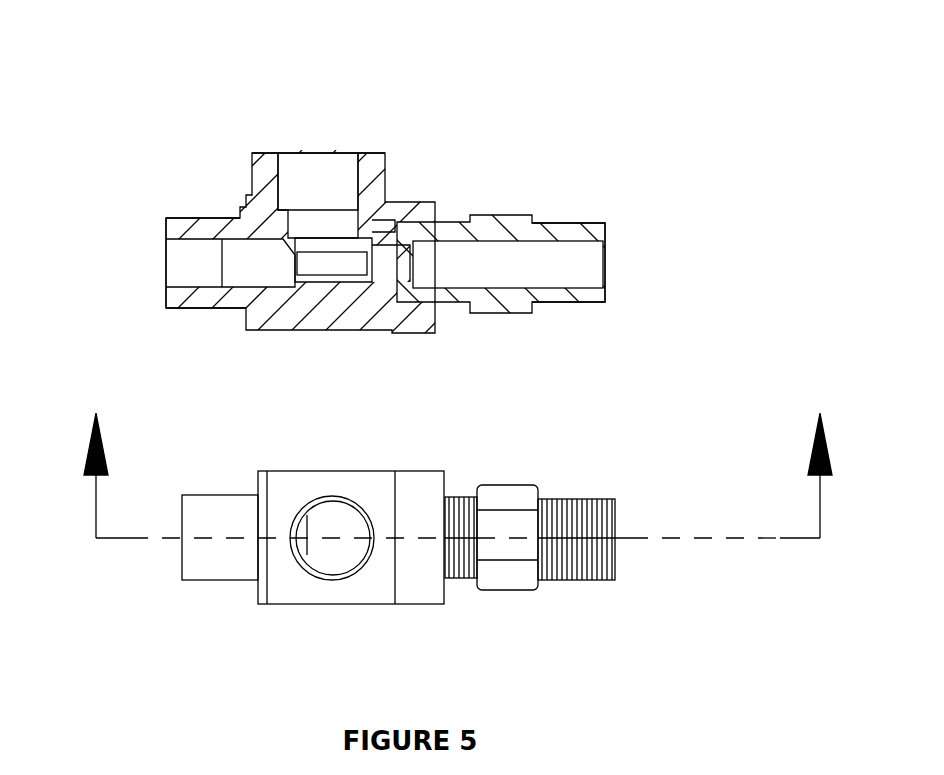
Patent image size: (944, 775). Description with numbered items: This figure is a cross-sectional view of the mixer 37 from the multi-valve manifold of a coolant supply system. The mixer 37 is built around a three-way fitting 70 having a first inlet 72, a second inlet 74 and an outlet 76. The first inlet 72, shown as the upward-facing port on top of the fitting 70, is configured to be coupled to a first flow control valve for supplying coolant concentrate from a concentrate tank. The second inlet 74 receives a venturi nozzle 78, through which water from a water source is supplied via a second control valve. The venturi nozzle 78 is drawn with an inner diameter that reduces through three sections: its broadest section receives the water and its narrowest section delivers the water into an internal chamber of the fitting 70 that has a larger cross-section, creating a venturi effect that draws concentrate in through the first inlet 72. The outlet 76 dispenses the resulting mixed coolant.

The mixer 37 is at (745, 98).
The three-way fitting 70 is at (255, 333).
The first inlet 72 is at (322, 148).
The second inlet 74 is at (448, 212).
The outlet 76 is at (160, 268).
The venturi nozzle 78 is at (592, 222).